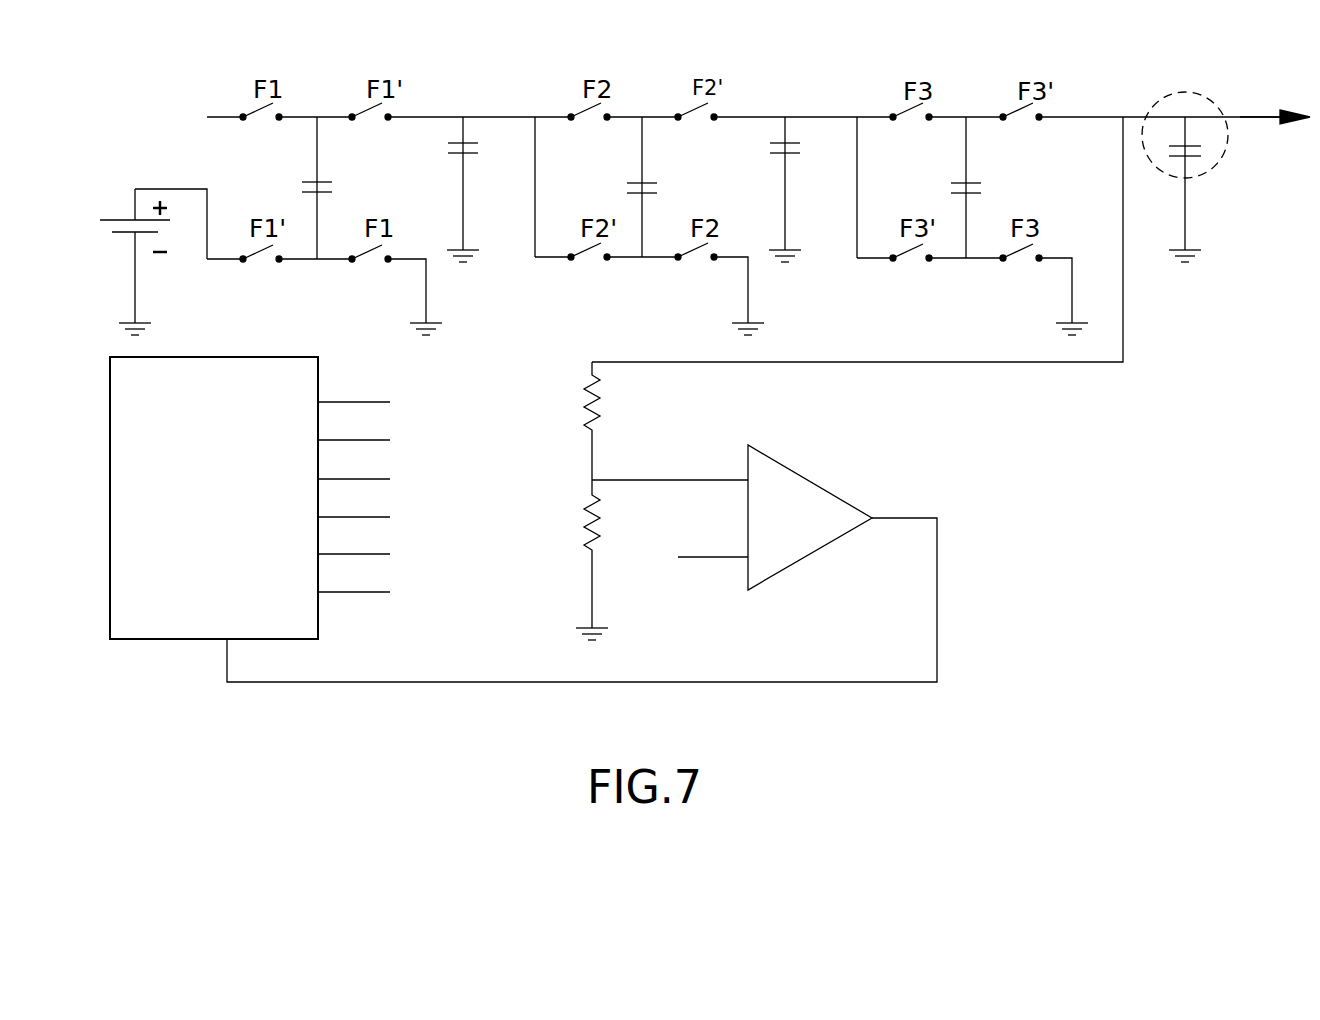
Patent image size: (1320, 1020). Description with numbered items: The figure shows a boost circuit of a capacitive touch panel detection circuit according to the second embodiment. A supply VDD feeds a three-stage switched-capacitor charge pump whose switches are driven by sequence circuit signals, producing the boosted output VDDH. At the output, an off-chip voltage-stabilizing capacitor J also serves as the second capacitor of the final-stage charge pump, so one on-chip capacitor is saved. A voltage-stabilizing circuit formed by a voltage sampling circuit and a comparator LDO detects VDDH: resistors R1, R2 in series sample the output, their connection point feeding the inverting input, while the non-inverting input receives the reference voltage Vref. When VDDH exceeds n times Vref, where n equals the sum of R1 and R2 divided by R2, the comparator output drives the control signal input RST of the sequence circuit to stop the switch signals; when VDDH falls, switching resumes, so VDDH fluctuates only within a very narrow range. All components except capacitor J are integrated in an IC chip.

The supply voltage VDD is at (153, 245).
The boosted output voltage VDDH is at (1275, 98).
The off-chip voltage-stabilizing capacitor J is at (1185, 177).
The resistor R1 is at (571, 421).
The resistor R2 is at (575, 560).
The comparator LDO is at (582, 563).
The reference voltage Vref is at (685, 555).
The control signal input end of the sequence circuit RST is at (269, 498).